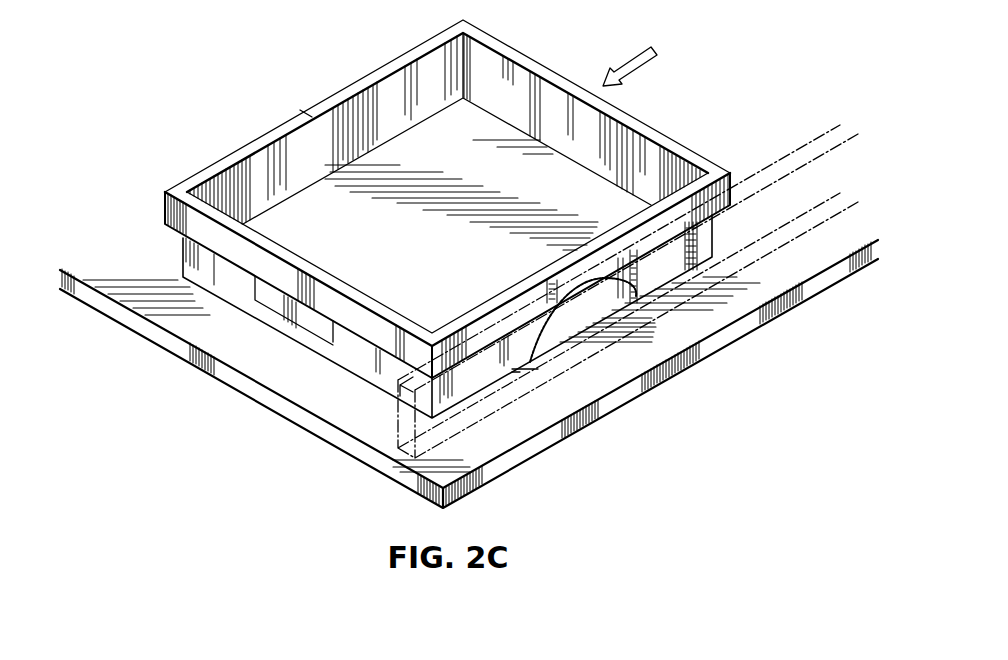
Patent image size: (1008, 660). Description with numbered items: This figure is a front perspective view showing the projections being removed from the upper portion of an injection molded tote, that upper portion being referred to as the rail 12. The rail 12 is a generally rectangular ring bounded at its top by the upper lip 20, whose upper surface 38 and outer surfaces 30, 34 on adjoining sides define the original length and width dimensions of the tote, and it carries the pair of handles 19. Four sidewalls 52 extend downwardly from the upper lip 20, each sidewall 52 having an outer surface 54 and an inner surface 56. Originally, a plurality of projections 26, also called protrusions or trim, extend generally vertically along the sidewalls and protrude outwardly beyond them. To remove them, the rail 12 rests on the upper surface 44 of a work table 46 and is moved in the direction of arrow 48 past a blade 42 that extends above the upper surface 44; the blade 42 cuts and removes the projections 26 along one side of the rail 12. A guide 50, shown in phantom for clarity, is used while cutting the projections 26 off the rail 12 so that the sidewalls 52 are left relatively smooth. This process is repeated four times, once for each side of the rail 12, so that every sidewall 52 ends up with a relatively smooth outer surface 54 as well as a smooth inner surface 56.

The rail 12 is at (273, 93).
The handles 19 is at (292, 313).
The upper lip 20 is at (163, 191).
The projections 26 is at (692, 266).
The outer surface 30 is at (542, 64).
The outer surface 34 is at (356, 84).
The upper surface 38 is at (647, 124).
The blade 42 is at (583, 322).
The upper surface 44 is at (112, 243).
The work table 46 is at (264, 400).
The arrow 48 is at (622, 72).
The guide 50 is at (824, 128).
The sidewalls 52 is at (580, 146).
The outer surface 54 is at (246, 299).
The inner surface 56 is at (292, 168).